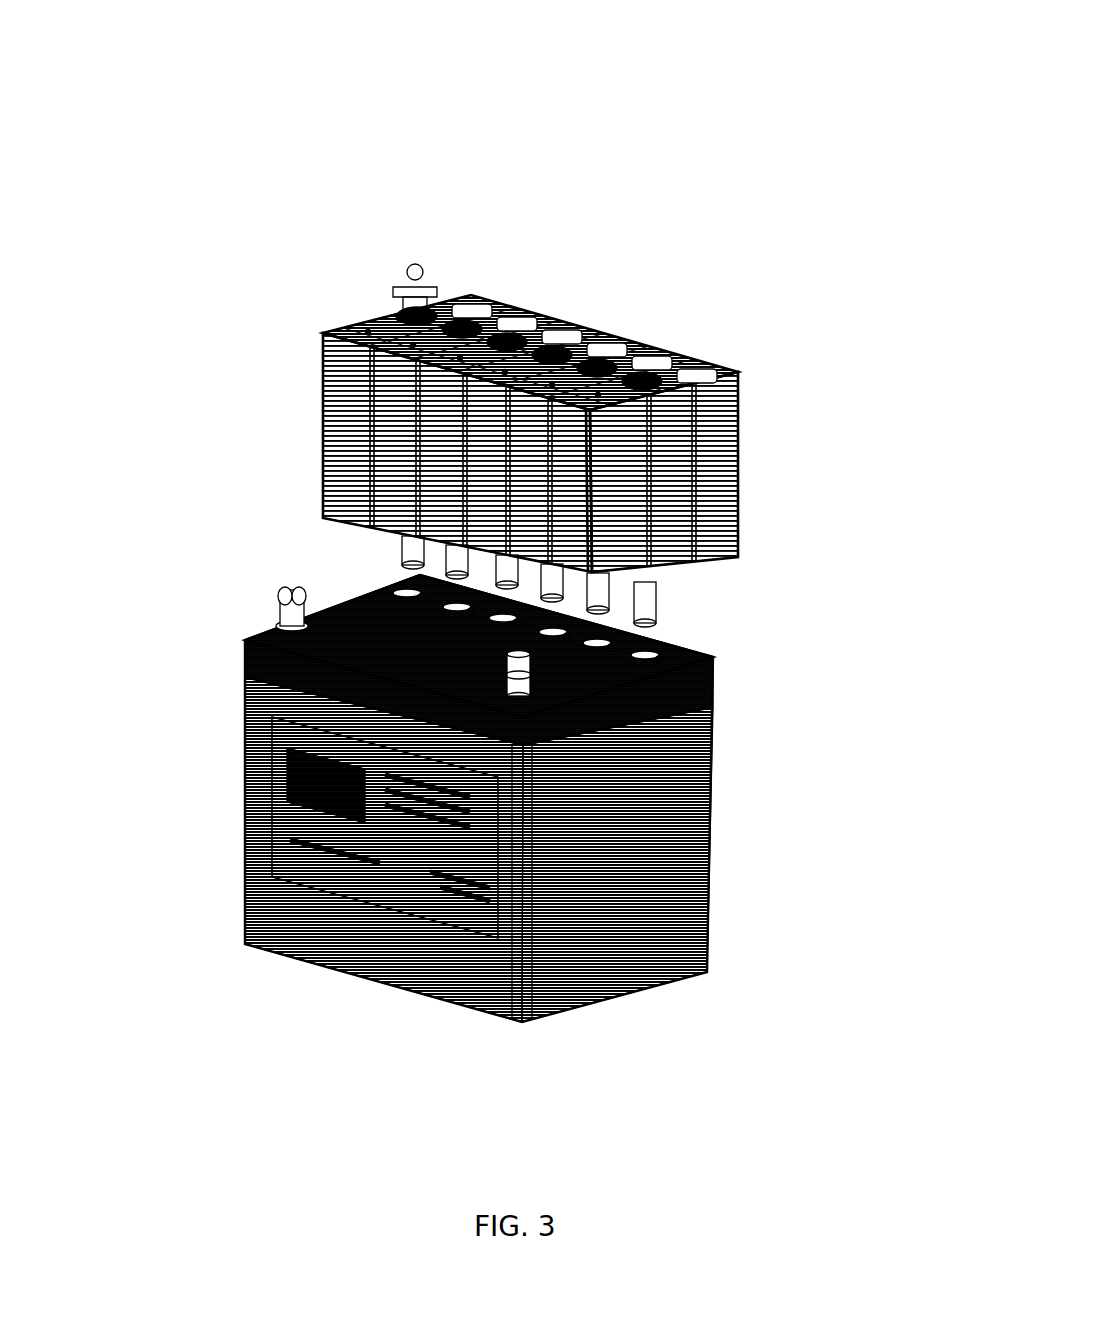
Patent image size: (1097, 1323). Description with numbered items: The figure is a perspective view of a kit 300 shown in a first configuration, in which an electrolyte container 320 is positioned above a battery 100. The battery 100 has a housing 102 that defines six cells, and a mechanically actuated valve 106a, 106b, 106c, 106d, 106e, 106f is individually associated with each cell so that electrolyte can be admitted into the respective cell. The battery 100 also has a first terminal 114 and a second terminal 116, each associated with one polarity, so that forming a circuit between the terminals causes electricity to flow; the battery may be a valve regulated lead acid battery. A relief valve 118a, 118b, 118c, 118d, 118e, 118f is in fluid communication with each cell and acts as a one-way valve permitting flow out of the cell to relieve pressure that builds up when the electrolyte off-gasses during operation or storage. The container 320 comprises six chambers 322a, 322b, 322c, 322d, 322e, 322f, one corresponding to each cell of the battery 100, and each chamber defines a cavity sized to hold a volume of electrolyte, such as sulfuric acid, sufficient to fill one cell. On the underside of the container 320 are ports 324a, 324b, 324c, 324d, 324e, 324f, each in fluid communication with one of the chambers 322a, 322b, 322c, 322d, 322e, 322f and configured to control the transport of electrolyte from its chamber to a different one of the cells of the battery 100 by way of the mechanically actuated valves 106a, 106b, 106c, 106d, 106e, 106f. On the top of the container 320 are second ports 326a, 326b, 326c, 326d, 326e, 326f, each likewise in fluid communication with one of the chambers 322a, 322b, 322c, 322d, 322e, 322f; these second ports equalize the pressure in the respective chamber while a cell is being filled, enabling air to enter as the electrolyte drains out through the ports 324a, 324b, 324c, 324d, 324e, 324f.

The kit 300 is at (358, 165).
The container 320 is at (330, 333).
The chamber 322a is at (432, 308).
The chamber 322b is at (477, 321).
The chamber 322c is at (522, 334).
The chamber 322d is at (567, 347).
The chamber 322e is at (612, 360).
The chamber 322f is at (657, 373).
The second port 326a is at (474, 310).
The second port 326b is at (519, 323).
The second port 326c is at (564, 336).
The second port 326d is at (609, 349).
The second port 326e is at (654, 362).
The second port 326f is at (699, 375).
The port 324a is at (424, 563).
The port 324b is at (468, 576).
The port 324c is at (518, 586).
The port 324d is at (563, 598).
The port 324e is at (609, 610).
The port 324f is at (656, 623).
The battery 100 is at (245, 662).
The housing 102 is at (262, 785).
The first terminal 114 is at (288, 590).
The second terminal 116 is at (524, 800).
The mechanically actuated valve 106a is at (407, 593).
The mechanically actuated valve 106b is at (457, 607).
The mechanically actuated valve 106c is at (503, 618).
The mechanically actuated valve 106d is at (553, 632).
The mechanically actuated valve 106e is at (597, 643).
The mechanically actuated valve 106f is at (645, 655).
The relief valve 118a is at (419, 599).
The relief valve 118b is at (469, 613).
The relief valve 118c is at (515, 624).
The relief valve 118d is at (565, 638).
The relief valve 118e is at (609, 649).
The relief valve 118f is at (657, 661).